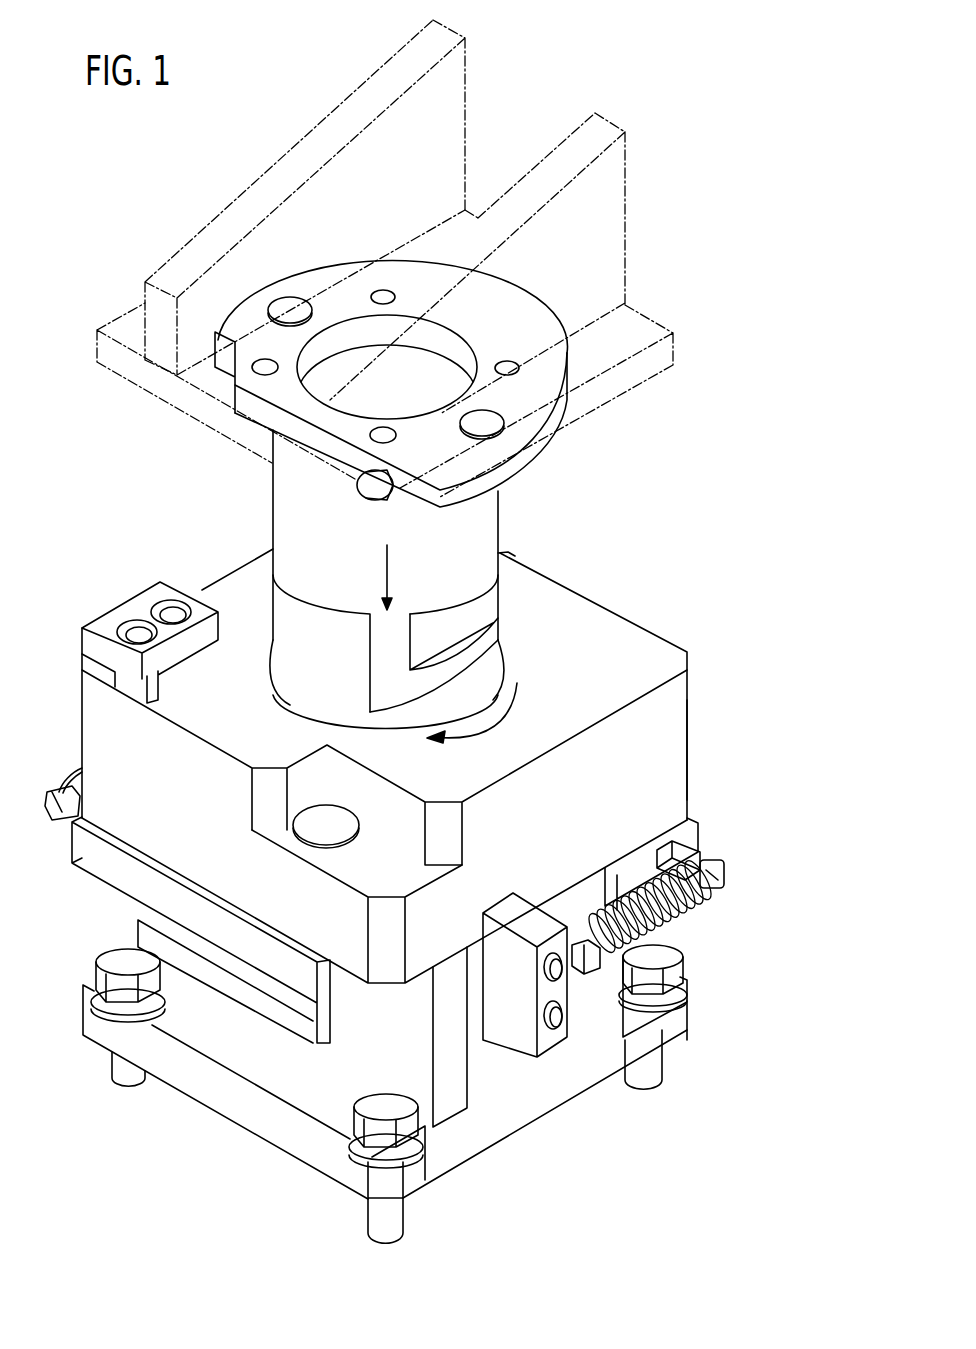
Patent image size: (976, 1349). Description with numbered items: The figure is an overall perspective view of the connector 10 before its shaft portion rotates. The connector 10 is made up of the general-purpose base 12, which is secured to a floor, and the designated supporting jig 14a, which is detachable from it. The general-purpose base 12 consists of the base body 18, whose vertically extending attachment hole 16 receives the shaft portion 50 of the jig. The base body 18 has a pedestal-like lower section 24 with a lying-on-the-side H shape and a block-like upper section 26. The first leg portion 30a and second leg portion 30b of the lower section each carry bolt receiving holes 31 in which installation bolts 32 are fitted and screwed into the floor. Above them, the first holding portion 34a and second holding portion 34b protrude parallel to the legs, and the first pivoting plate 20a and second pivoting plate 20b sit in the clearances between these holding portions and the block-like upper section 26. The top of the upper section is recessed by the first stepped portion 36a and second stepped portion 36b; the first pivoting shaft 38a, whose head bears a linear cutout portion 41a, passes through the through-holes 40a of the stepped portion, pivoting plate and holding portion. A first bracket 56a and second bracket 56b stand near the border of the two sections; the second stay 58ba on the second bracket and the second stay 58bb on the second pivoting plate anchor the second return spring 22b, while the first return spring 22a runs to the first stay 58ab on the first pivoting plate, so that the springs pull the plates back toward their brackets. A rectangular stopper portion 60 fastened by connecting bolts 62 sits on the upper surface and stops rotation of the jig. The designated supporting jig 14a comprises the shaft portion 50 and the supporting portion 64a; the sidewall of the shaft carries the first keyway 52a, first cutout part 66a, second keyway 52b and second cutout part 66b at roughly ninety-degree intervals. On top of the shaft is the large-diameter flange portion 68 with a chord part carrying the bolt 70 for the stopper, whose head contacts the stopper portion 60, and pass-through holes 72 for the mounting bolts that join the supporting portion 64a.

The connector 10 is at (680, 98).
The general-purpose base 12 is at (696, 669).
The designated supporting jig 14a is at (584, 455).
The attachment hole 16 is at (500, 667).
The base body 18 is at (645, 647).
The first pivoting plate 20a is at (97, 867).
The second pivoting plate 20b is at (700, 823).
The first return spring 22a is at (80, 777).
The second return spring 22b is at (686, 928).
The pedestal-like lower section 24 is at (550, 1088).
The block-like upper section 26 is at (681, 750).
The first leg portion 30a is at (230, 1102).
The second leg portion 30b is at (670, 1037).
The bolt receiving holes 31 is at (128, 1010).
The installation bolts 32 is at (120, 962).
The first holding portion 34a is at (237, 973).
The second holding portion 34b is at (700, 845).
The first stepped portion 36a is at (372, 860).
The second stepped portion 36b is at (503, 555).
The first pivoting shaft 38a is at (312, 818).
The through-holes 40a is at (323, 852).
The linear cutout portion 41a is at (307, 816).
The shaft portion 50 is at (287, 517).
The first keyway 52a is at (438, 638).
The second keyway 52b is at (273, 610).
The first bracket 56a is at (143, 618).
The second bracket 56b is at (520, 912).
The first stay 58ab is at (66, 806).
The second stay 58ba is at (578, 972).
The second stay 58bb is at (714, 890).
The stopper portion 60 is at (185, 647).
The connecting bolts 62 is at (168, 612).
The supporting portion 64a is at (607, 188).
The first cutout part 66a is at (313, 613).
The second cutout part 66b is at (500, 567).
The flange portion 68 is at (522, 320).
The bolt for a stopper 70 is at (362, 500).
The pass-through holes 72 is at (292, 300).